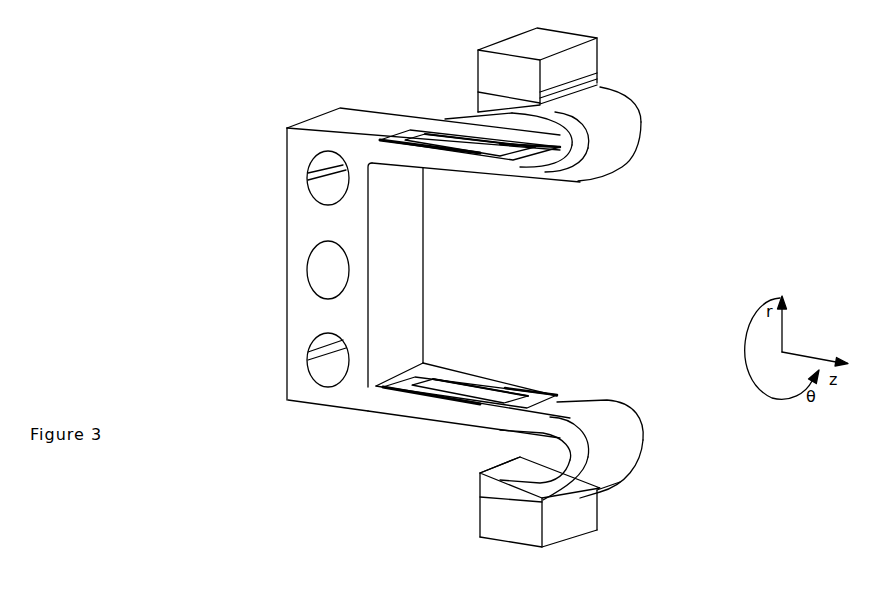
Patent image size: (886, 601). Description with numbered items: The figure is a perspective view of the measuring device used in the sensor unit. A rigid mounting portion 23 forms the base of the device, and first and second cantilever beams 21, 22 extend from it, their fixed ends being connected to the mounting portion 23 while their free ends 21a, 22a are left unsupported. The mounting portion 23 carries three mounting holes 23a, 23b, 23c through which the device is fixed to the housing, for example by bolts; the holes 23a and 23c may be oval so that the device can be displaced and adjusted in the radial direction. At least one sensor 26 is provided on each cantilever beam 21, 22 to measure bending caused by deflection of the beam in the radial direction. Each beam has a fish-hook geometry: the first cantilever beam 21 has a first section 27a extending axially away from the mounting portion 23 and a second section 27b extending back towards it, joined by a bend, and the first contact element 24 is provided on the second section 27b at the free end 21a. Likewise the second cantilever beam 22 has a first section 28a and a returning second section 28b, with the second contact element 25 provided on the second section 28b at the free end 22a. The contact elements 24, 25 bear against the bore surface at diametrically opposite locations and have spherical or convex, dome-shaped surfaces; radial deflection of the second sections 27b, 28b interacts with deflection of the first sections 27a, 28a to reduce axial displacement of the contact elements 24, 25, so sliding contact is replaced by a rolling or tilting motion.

The first cantilever beam 21 is at (483, 199).
The free end of the first cantilever beam 21a is at (454, 58).
The second cantilever beam 22 is at (428, 431).
The free end of the second cantilever beam 22a is at (453, 487).
The mounting portion 23 is at (298, 211).
The mounting hole 23a is at (337, 182).
The mounting hole 23b is at (323, 258).
The mounting hole 23c is at (322, 367).
The first contact element 24 is at (537, 45).
The second contact element 25 is at (513, 533).
The sensor 26 is at (463, 140).
The first section of the first cantilever beam 27a is at (463, 163).
The second section of the first cantilever beam 27b is at (512, 103).
The first section of the second cantilever beam 28a is at (466, 420).
The second section of the second cantilever beam 28b is at (512, 487).